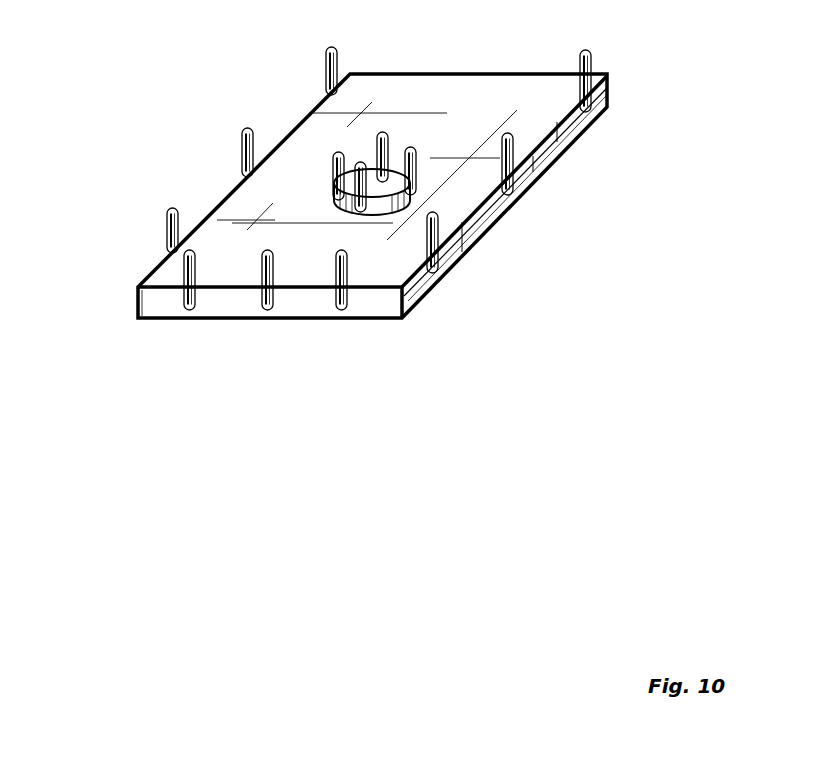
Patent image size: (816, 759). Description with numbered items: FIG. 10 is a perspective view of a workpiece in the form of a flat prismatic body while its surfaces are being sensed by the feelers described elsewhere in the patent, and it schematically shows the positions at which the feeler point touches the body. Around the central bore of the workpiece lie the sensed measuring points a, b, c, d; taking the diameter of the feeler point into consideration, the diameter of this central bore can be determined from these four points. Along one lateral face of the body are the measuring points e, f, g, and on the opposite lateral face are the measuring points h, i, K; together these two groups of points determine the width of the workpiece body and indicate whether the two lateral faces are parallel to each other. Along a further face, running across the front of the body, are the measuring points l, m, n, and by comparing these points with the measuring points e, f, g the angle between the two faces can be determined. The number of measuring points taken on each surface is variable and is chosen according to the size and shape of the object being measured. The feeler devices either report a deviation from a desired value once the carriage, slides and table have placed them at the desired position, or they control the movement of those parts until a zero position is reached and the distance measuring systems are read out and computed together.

The measuring point K is at (325, 72).
The measuring point g is at (590, 88).
The measuring point i is at (242, 152).
The measuring point h is at (167, 230).
The measuring point l is at (165, 318).
The measuring point m is at (257, 318).
The measuring point n is at (335, 318).
The measuring point e is at (437, 250).
The measuring point f is at (512, 183).
The measuring point d is at (333, 188).
The measuring point a is at (359, 212).
The measuring point b is at (387, 140).
The measuring point c is at (415, 178).